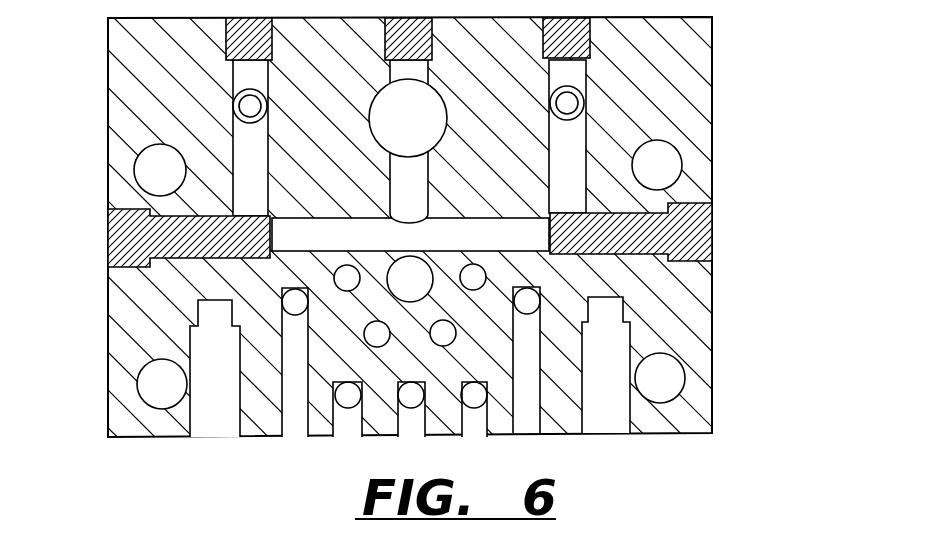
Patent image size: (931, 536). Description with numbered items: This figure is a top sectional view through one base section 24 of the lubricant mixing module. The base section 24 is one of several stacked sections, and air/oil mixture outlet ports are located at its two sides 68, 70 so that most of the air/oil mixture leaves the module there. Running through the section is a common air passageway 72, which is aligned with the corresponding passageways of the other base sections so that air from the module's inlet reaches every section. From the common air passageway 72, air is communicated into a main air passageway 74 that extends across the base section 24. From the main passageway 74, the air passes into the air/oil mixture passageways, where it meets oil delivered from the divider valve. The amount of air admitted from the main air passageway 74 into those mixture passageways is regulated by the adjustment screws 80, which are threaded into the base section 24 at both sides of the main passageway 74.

The base section 24 is at (465, 268).
The side of the base section 68 is at (108, 75).
The side of the base section 70 is at (712, 108).
The common air passageway 72 is at (438, 143).
The main air passageway 74 is at (328, 225).
The adjustment screw 80 is at (128, 237).